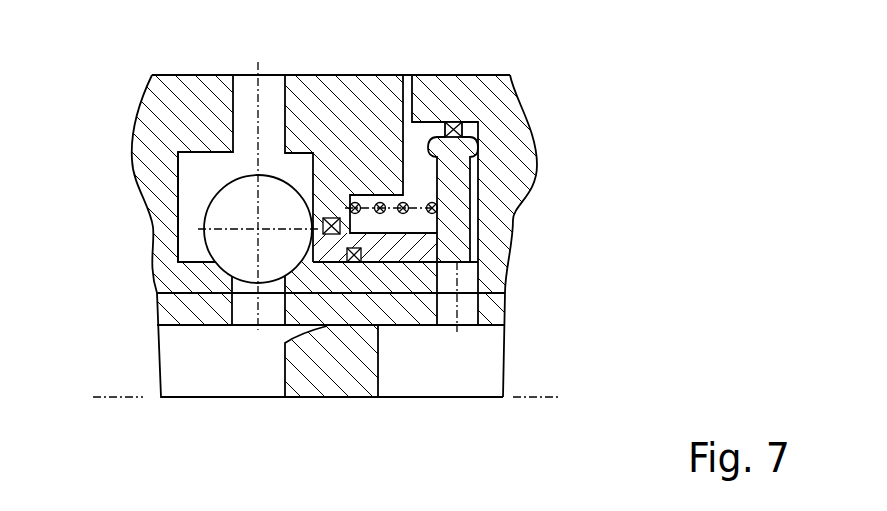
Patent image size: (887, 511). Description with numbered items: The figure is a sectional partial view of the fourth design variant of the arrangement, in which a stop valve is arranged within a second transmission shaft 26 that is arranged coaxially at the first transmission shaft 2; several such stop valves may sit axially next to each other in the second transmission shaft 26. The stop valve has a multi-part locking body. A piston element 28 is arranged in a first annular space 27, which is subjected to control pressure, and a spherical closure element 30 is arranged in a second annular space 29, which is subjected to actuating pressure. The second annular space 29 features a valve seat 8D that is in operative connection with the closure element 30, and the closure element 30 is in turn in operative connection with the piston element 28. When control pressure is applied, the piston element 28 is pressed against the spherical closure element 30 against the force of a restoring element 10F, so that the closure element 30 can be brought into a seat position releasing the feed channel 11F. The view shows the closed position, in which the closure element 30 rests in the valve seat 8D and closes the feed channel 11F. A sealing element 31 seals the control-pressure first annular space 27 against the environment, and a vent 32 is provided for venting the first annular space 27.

The first transmission shaft 2 is at (162, 298).
The second transmission shaft 26 is at (152, 162).
The first annular space 27 is at (470, 212).
The piston element 28 is at (470, 246).
The second annular space 29 is at (268, 167).
The spherical closure element 30 is at (272, 207).
The sealing element 31 is at (455, 120).
The vent 32 is at (392, 78).
The restoring element 10F is at (403, 207).
The valve seat 8D is at (178, 272).
The feed channel 11F is at (245, 313).